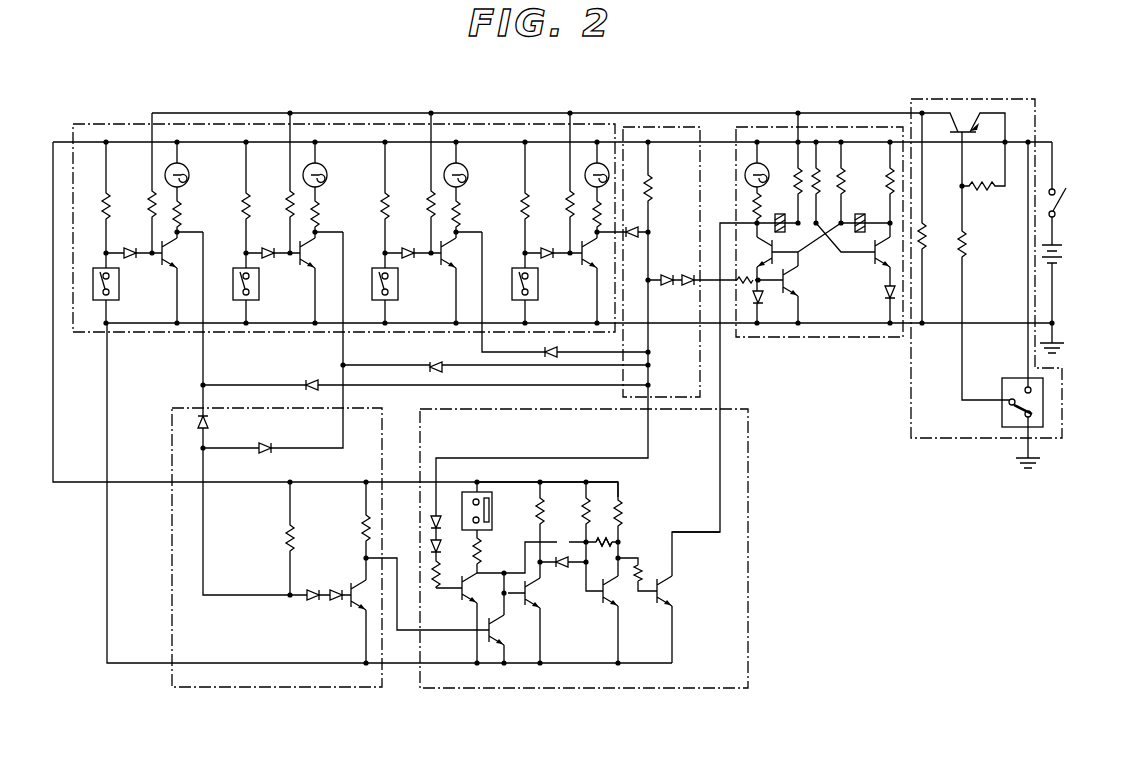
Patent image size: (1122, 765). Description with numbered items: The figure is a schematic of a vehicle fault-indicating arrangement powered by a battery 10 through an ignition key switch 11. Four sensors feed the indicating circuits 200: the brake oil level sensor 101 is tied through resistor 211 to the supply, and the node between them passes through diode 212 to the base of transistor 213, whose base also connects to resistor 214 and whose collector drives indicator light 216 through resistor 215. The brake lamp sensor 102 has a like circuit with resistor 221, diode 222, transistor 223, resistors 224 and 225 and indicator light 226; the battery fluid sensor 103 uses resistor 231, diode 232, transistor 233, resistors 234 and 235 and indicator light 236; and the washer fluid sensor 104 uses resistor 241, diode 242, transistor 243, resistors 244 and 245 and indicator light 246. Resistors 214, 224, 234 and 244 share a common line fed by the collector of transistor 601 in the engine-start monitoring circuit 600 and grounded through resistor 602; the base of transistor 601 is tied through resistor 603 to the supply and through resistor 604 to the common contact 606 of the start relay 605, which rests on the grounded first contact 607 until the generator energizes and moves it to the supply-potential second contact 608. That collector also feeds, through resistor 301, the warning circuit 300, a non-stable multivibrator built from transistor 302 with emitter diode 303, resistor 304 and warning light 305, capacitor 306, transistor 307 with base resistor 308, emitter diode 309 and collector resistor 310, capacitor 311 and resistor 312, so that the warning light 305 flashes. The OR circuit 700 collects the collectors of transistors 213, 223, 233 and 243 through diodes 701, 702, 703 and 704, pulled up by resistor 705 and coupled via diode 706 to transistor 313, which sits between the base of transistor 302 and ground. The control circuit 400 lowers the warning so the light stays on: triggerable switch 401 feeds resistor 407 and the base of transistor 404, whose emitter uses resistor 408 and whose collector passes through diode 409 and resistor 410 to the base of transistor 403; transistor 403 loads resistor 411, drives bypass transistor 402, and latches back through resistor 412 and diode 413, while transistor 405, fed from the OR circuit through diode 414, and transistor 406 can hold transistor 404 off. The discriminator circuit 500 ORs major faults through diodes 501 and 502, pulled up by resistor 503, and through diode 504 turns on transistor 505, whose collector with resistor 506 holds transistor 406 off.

The power supply 10 is at (1064, 258).
The ignition key switch 11 is at (1066, 205).
The sensor 101 is at (119, 296).
The sensor 102 is at (259, 296).
The sensor 103 is at (398, 296).
The sensor 104 is at (537, 296).
The indicating circuits 200 is at (310, 124).
The resistor 211 is at (104, 211).
The diode 212 is at (131, 247).
The transistor 213 is at (164, 266).
The resistor 214 is at (148, 199).
The resistor 215 is at (182, 212).
The indicator light 216 is at (188, 169).
The resistor 221 is at (241, 203).
The diode 222 is at (268, 260).
The transistor 223 is at (313, 272).
The resistor 224 is at (287, 197).
The resistor 225 is at (323, 219).
The indicator light 226 is at (327, 167).
The resistor 231 is at (380, 205).
The diode 232 is at (412, 247).
The transistor 233 is at (443, 266).
The resistor 234 is at (428, 197).
The resistor 235 is at (462, 212).
The indicator light 236 is at (468, 169).
The resistor 241 is at (520, 204).
The diode 242 is at (548, 247).
The transistor 243 is at (585, 268).
The resistor 244 is at (567, 197).
The resistor 245 is at (590, 212).
The indicator light 246 is at (597, 163).
The warning circuit 300 is at (752, 127).
The resistor 301 is at (795, 178).
The transistor 302 is at (762, 257).
The diode 303 is at (763, 300).
The resistor 304 is at (752, 205).
The warning light 305 is at (745, 175).
The capacitor 306 is at (780, 214).
The transistor 307 is at (870, 260).
The resistor 308 is at (818, 170).
The diode 309 is at (885, 296).
The resistor 310 is at (846, 188).
The capacitor 311 is at (861, 214).
The resistor 312 is at (888, 178).
The transistor 313 is at (790, 288).
The control circuit 400 is at (752, 535).
The triggerable switch 401 is at (492, 514).
The transistor 402 is at (672, 590).
The transistor 403 is at (612, 600).
The transistor 404 is at (538, 604).
The transistor 405 is at (464, 601).
The transistor 406 is at (497, 640).
The resistor 407 is at (481, 554).
The resistor 408 is at (544, 514).
The diode 409 is at (560, 568).
The resistor 410 is at (587, 482).
The resistor 411 is at (624, 514).
The resistor 412 is at (621, 545).
The diode 413 is at (586, 516).
The diode 414 is at (430, 524).
The discriminator circuit 500 is at (172, 687).
The diode 501 is at (210, 430).
The diode 502 is at (270, 456).
The resistor 503 is at (287, 533).
The diode 504 is at (334, 586).
The transistor 505 is at (356, 608).
The resistor 506 is at (362, 529).
The engine-start monitoring circuit 600 is at (996, 99).
The transistor 601 is at (960, 125).
The resistor 602 is at (925, 235).
The resistor 603 is at (984, 190).
The resistor 604 is at (966, 254).
The start relay 605 is at (1002, 384).
The common contact 606 is at (1009, 404).
The first contact 607 is at (1032, 414).
The second contact 608 is at (1032, 390).
The OR circuit 700 is at (665, 127).
The diode 701 is at (311, 380).
The diode 702 is at (431, 366).
The diode 703 is at (558, 355).
The diode 704 is at (632, 242).
The resistor 705 is at (652, 189).
The diode 706 is at (686, 272).